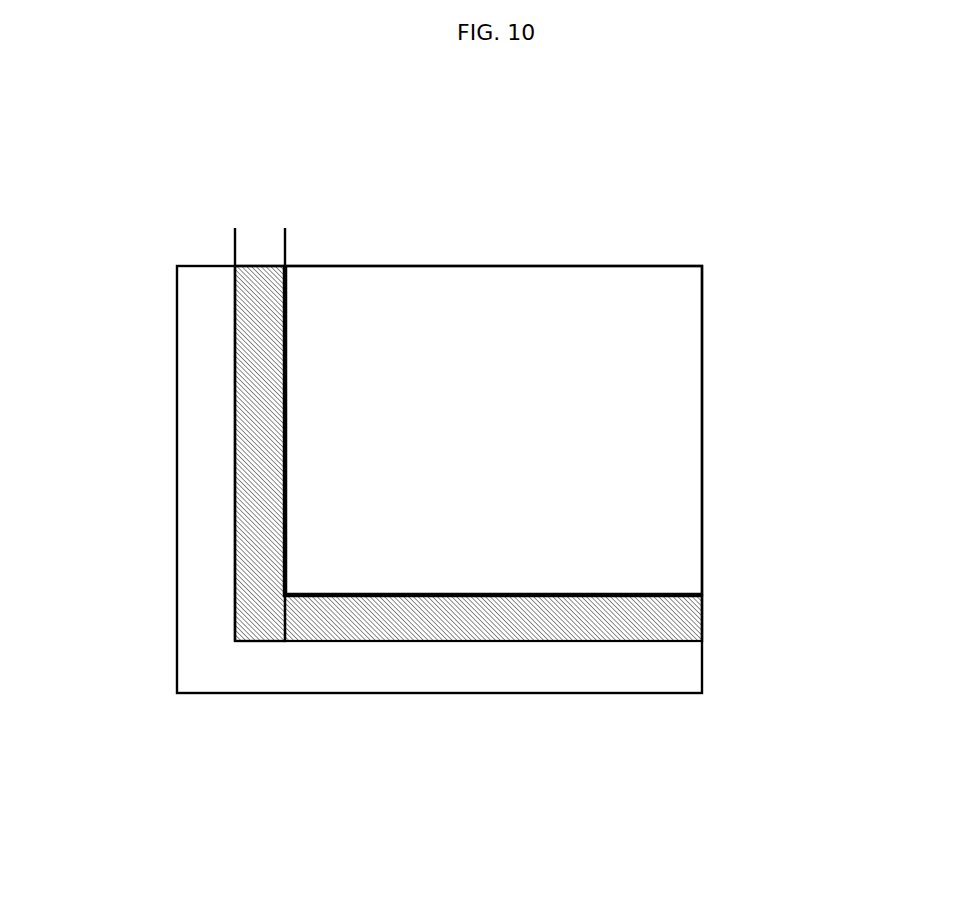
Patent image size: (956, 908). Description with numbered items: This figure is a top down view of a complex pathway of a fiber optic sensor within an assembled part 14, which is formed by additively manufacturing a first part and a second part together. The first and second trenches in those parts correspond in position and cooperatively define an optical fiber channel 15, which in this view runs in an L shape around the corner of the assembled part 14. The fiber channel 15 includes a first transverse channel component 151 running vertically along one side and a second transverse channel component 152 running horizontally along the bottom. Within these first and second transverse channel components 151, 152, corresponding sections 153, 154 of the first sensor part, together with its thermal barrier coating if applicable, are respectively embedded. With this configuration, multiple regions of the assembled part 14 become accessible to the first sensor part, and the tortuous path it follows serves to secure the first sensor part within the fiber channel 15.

The assembled part 14 is at (173, 690).
The optical fiber channel 15 is at (272, 618).
The first section of the first sensor part 153 is at (262, 332).
The first transverse channel component 151 is at (235, 415).
The second transverse channel component 152 is at (380, 643).
The second section of the first sensor part 154 is at (493, 620).